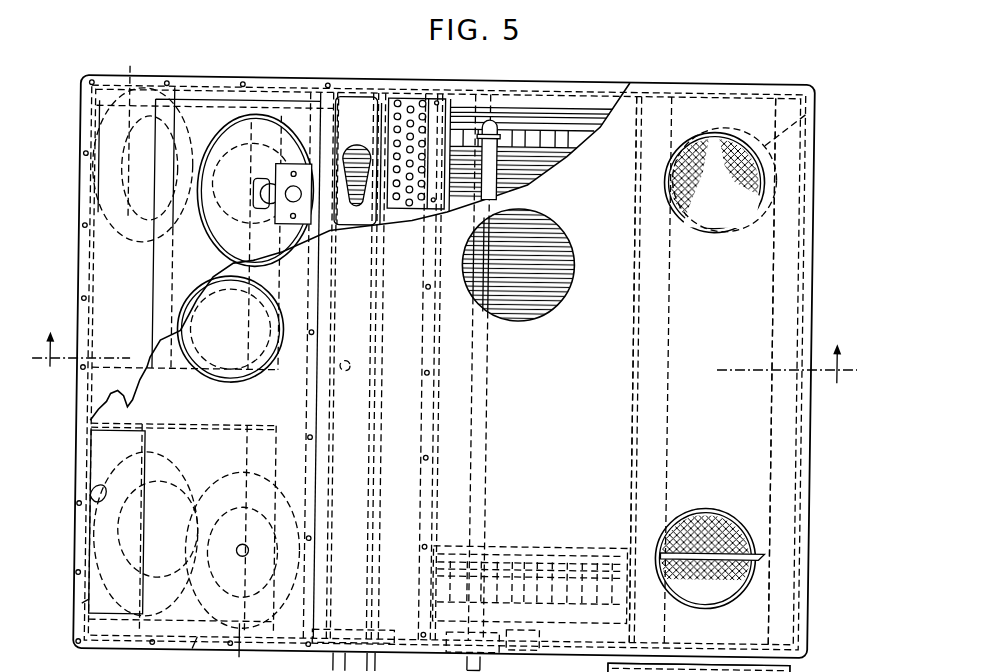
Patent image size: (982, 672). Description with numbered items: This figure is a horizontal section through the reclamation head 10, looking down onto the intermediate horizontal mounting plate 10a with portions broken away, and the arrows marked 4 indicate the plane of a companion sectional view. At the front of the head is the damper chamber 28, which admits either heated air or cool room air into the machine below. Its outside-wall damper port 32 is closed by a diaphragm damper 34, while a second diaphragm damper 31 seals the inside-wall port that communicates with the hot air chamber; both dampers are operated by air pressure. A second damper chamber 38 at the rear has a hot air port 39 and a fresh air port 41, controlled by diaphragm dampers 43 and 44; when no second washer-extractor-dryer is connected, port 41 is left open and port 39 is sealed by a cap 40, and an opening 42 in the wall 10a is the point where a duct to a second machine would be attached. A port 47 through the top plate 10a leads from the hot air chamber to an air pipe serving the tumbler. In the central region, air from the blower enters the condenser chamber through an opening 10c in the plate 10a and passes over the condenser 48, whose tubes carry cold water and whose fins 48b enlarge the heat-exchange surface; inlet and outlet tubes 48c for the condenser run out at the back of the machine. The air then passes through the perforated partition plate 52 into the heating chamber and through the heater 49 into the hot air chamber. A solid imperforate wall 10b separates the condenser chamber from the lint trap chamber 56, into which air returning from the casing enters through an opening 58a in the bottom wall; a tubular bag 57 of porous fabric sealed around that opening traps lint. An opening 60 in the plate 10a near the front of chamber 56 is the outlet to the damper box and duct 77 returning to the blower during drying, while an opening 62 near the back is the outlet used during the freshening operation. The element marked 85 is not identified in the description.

The section line 4- 4 is at (444, 357).
The reclamation head 10 is at (813, 608).
The intermediate horizontal mounting plate 10a is at (100, 397).
The solid imperforate wall 10b is at (633, 370).
The opening 10c is at (556, 299).
The damper chamber 28 is at (106, 262).
The diaphragm damper 31 is at (265, 132).
The damper port 32 is at (140, 154).
The diaphragm damper 34 is at (123, 76).
The second damper chamber 38 is at (88, 468).
The hot air port 39 is at (201, 651).
The cap 40 is at (250, 647).
The fresh air port 41 is at (135, 534).
The opening 42 is at (92, 500).
The diaphragm damper 43 is at (237, 486).
The diaphragm damper 44 is at (85, 608).
The port 47 is at (196, 317).
The condenser 48 is at (540, 106).
The fins 48b is at (497, 157).
The inlet and outlet tubes 48c is at (530, 609).
The heater 49 is at (355, 130).
The perforated partition plate 52 is at (404, 99).
The lint trap chamber 56 is at (781, 476).
The tubular bag 57 is at (774, 423).
The opening 58a is at (804, 110).
The opening 60 is at (659, 175).
The opening 62 is at (726, 593).
The duct 77 is at (678, 666).
The bracket 85 is at (287, 166).